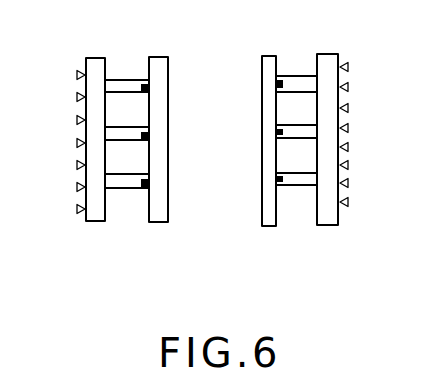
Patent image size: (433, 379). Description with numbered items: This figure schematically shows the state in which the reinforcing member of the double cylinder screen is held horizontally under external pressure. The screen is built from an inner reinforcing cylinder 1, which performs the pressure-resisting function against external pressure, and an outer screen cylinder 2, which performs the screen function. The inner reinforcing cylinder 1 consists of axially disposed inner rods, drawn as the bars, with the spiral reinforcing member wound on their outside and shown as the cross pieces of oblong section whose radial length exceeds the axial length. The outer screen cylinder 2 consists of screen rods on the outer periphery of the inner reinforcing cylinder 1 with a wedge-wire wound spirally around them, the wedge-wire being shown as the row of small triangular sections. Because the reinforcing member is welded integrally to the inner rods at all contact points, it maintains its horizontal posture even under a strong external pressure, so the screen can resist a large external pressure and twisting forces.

The inner reinforcing cylinder 1 is at (133, 64).
The outer screen cylinder 2 is at (50, 121).